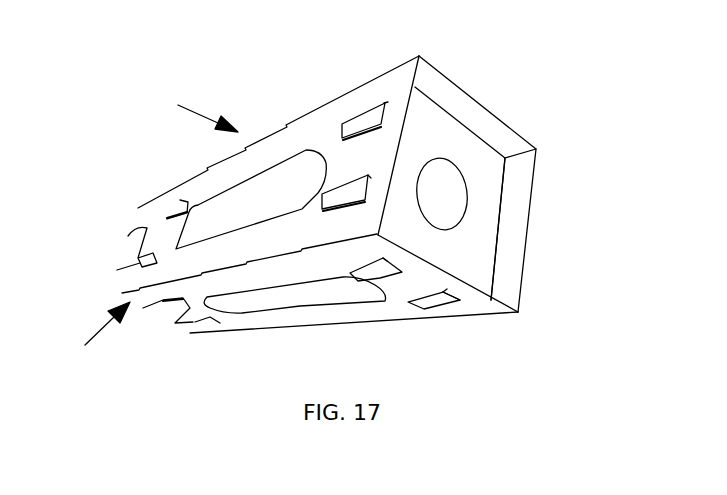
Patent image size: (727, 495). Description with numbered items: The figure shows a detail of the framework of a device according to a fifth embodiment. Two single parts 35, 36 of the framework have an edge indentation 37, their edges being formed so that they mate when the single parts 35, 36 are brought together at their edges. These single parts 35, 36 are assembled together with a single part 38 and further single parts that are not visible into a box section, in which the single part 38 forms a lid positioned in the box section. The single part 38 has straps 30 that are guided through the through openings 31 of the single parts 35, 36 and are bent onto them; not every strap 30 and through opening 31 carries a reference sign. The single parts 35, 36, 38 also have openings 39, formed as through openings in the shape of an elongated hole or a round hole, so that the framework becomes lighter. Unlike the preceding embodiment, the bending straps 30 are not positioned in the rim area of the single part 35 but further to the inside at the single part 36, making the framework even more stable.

The strap 30 is at (358, 114).
The through opening 31 is at (465, 301).
The single part 35 is at (398, 82).
The single part 36 is at (393, 308).
The edge indentation 37 is at (148, 226).
The single part 38 is at (492, 211).
The opening 39 is at (300, 156).